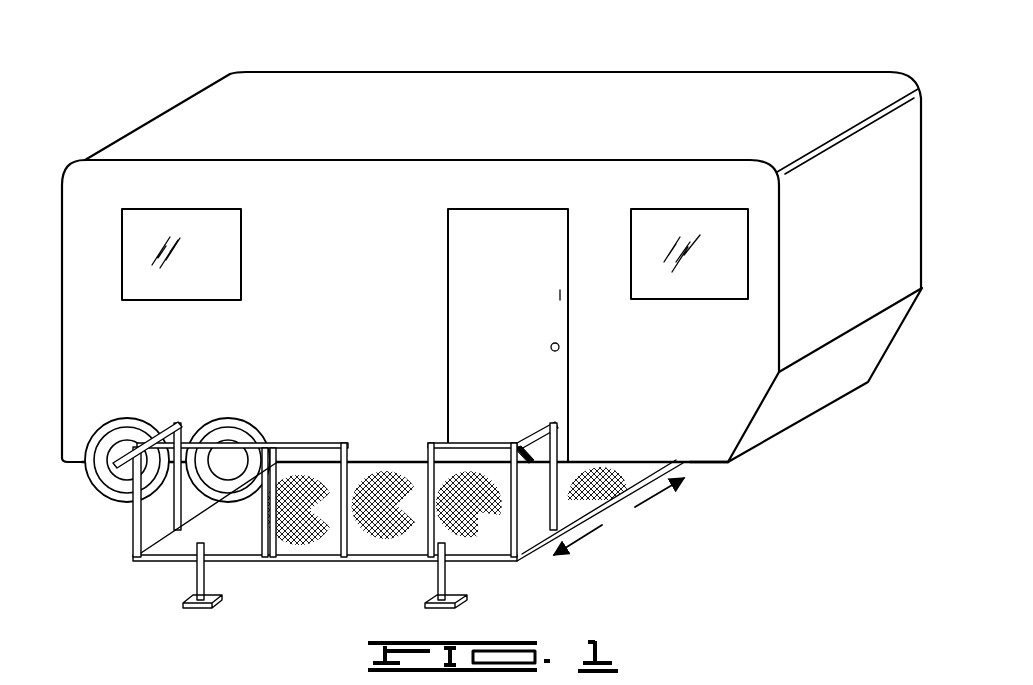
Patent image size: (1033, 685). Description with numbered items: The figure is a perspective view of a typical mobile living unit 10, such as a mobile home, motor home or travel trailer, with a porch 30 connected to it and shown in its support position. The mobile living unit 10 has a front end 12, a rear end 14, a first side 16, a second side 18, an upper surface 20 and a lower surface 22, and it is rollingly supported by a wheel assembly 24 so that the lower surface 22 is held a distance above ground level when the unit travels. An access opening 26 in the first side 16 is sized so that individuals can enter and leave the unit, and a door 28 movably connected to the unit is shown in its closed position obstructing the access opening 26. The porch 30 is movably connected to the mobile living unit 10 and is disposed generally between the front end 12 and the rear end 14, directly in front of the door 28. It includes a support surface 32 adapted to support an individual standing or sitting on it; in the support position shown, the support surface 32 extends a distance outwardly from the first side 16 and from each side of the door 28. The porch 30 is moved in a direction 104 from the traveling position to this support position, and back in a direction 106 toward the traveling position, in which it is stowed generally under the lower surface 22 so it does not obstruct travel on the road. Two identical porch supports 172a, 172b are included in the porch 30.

The mobile living unit 10 is at (483, 265).
The front end 12 is at (818, 330).
The rear end 14 is at (62, 207).
The first side 16 is at (295, 182).
The second side 18 is at (313, 72).
The upper surface 20 is at (628, 115).
The lower surface 22 is at (707, 464).
The wheel assembly 24 is at (110, 506).
The access opening 26 is at (568, 262).
The door 28 is at (468, 279).
The porch 30 is at (418, 523).
The support surface 32 is at (610, 493).
The direction 104 is at (582, 540).
The direction 106 is at (660, 495).
The porch support 172a is at (192, 584).
The porch support 172b is at (430, 584).